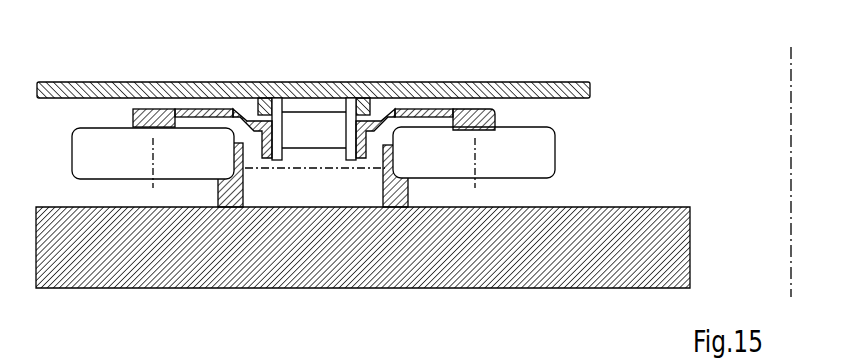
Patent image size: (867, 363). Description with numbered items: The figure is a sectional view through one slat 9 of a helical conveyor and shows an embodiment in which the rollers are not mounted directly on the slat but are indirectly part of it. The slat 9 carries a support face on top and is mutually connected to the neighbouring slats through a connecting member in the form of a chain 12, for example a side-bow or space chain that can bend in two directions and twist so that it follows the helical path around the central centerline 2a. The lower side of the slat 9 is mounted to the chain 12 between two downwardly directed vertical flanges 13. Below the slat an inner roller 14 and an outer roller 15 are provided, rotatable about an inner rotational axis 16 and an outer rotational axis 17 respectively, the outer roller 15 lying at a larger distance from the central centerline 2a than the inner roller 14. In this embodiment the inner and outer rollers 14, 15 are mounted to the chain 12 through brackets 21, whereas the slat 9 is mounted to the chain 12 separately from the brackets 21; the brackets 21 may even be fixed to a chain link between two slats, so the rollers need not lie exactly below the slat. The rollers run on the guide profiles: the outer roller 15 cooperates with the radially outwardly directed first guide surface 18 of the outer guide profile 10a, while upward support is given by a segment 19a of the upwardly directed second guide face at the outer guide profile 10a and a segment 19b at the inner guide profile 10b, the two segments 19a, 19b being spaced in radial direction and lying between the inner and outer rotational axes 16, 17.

The central centerline 2a is at (790, 93).
The slat 9 is at (437, 82).
The outer guide profile 10a is at (220, 288).
The inner guide profile 10b is at (398, 288).
The chain 12 is at (330, 115).
The vertical flanges 13 is at (267, 103).
The inner roller 14 is at (540, 127).
The outer roller 15 is at (92, 127).
The inner rotational axis 16 is at (473, 120).
The outer rotational axis 17 is at (153, 110).
The first guide surface 18 is at (216, 140).
The segment of the second guide face 19a is at (218, 177).
The segment of the second guide face 19b is at (408, 178).
The brackets 21 is at (193, 110).